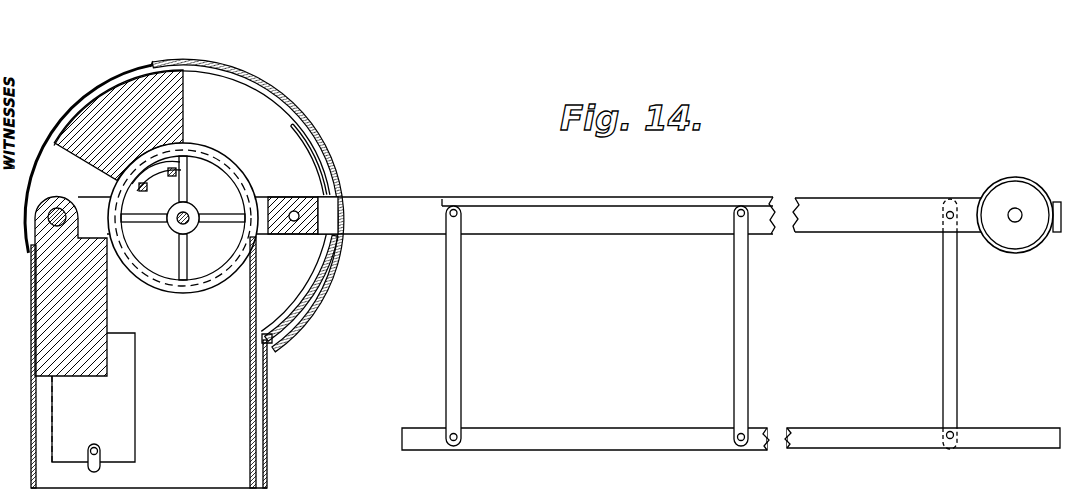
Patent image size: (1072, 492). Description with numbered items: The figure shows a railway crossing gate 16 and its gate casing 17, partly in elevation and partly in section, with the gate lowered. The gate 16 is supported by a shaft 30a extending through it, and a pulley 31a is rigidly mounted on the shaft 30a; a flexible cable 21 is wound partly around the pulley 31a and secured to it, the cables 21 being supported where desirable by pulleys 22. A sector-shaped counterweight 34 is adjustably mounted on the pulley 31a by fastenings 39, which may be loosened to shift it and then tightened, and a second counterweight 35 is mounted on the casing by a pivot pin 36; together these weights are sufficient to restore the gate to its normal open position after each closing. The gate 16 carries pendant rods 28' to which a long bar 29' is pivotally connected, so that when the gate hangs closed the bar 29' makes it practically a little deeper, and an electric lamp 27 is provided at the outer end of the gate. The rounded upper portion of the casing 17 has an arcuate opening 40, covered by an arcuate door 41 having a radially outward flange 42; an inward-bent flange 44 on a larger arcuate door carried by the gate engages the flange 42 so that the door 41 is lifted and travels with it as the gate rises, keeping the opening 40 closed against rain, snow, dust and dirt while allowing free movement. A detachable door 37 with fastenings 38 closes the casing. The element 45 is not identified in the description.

The casing 17 is at (109, 80).
The door 41 is at (162, 63).
The opening 40 is at (268, 76).
The guide strip 45 is at (283, 93).
The counterweight 34 is at (184, 99).
The gate 16 is at (672, 200).
The flange 42 is at (338, 245).
The pulley 31a is at (203, 147).
The shaft 30a is at (190, 211).
The fastenings 39 is at (138, 186).
The counterweight 35 is at (93, 313).
The pivot pin 36 is at (61, 198).
The flexible cable 21 is at (256, 298).
The flange 44 is at (272, 343).
The door 37 is at (93, 397).
The fastenings 38 is at (100, 466).
The bar 29' is at (731, 427).
The pendant rods 28' is at (701, 324).
The electric lamp 27 is at (1012, 195).
The pulley 22 is at (300, 490).